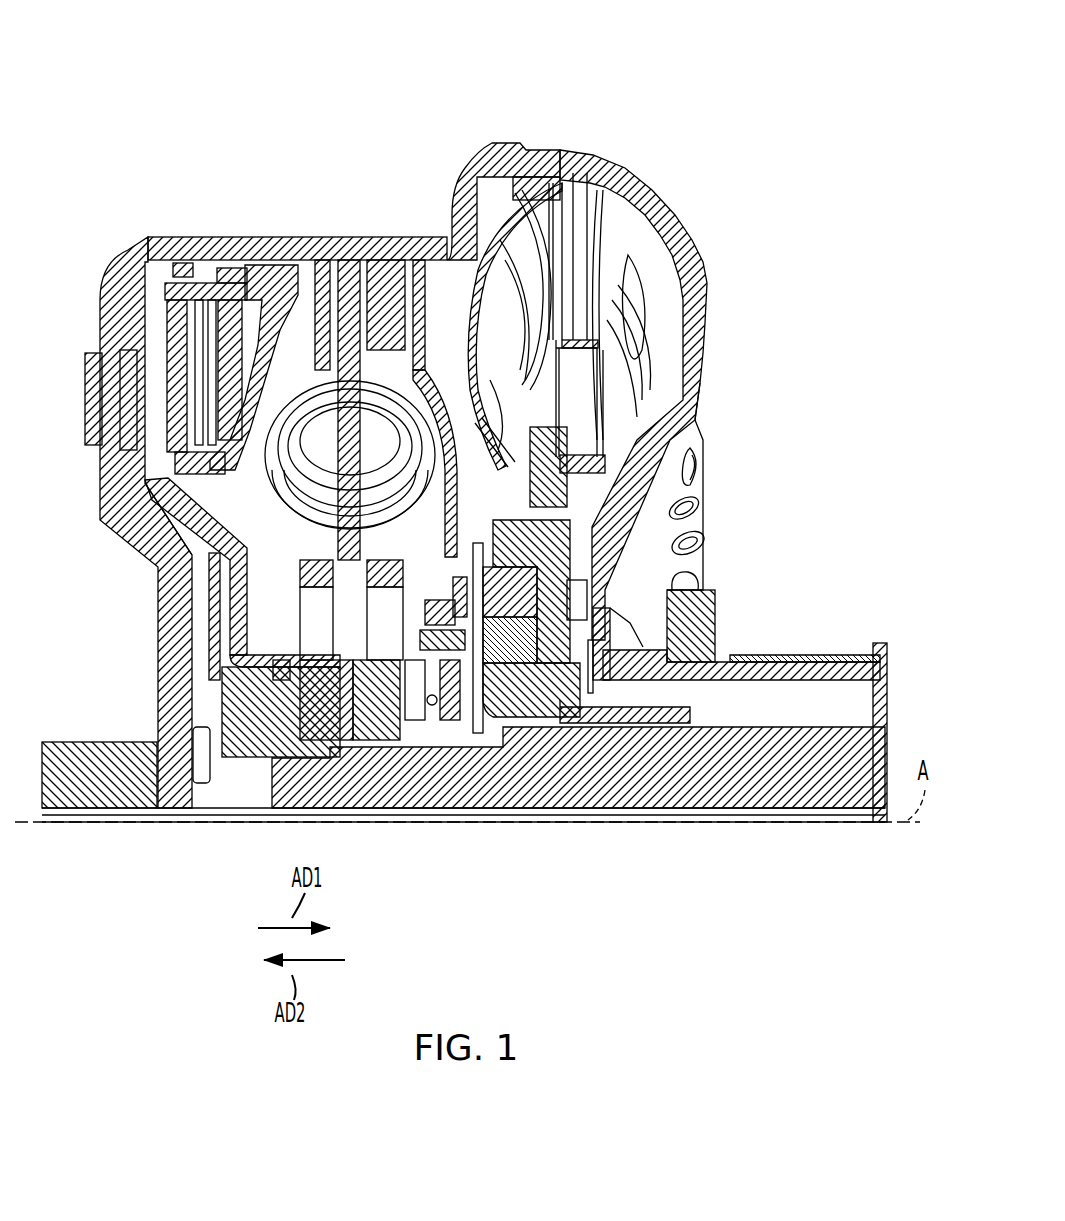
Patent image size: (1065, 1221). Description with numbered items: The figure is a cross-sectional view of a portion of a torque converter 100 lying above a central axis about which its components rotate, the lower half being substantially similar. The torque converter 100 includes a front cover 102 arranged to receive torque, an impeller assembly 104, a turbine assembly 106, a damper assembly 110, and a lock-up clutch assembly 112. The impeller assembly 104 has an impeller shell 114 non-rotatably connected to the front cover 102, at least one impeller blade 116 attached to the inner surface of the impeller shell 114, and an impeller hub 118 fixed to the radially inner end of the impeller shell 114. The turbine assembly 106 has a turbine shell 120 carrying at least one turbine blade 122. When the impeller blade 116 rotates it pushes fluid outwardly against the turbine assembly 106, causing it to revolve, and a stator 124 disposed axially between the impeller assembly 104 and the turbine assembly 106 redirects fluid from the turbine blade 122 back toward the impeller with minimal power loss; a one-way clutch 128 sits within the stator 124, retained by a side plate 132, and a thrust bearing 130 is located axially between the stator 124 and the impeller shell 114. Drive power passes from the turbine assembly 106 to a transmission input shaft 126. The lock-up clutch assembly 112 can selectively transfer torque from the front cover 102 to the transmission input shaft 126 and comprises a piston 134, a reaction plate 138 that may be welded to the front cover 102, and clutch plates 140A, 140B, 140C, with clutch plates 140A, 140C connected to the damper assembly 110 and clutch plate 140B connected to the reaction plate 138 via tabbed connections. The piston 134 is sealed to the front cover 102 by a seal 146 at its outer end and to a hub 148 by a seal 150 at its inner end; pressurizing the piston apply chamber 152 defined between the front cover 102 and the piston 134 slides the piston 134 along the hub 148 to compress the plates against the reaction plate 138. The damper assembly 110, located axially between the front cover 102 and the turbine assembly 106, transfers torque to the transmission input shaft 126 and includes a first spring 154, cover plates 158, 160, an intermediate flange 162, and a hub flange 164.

The torque converter 100 is at (707, 86).
The front cover 102 is at (120, 277).
The impeller assembly 104 is at (706, 312).
The turbine assembly 106 is at (568, 182).
The damper assembly 110 is at (413, 242).
The lock-up clutch assembly 112 is at (138, 387).
The impeller shell 114 is at (687, 391).
The impeller blade 116 is at (613, 292).
The impeller hub 118 is at (773, 675).
The turbine shell 120 is at (530, 203).
The turbine blade 122 is at (496, 314).
The stator 124 is at (560, 457).
The transmission input shaft 126 is at (303, 784).
The one-way clutch 128 is at (507, 603).
The thrust bearing 130 is at (480, 643).
The side plate 132 is at (567, 622).
The piston 134 is at (213, 518).
The reaction plate 138 is at (259, 282).
The clutch plate 140A is at (185, 437).
The clutch plate 140B is at (206, 290).
The clutch plate 140C is at (215, 455).
The seal 146 is at (184, 270).
The hub 148 is at (267, 707).
The seal 150 is at (280, 675).
The piston apply chamber 152 is at (192, 545).
The first spring 154 is at (410, 482).
The cover plate 158 is at (321, 288).
The cover plate 160 is at (420, 327).
The intermediate flange 162 is at (345, 570).
The hub flange 164 is at (405, 715).